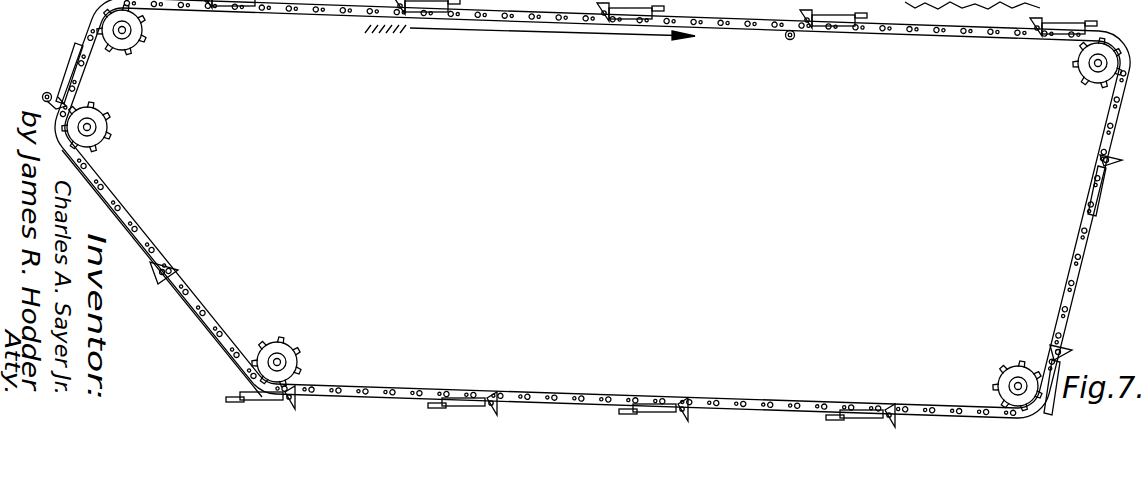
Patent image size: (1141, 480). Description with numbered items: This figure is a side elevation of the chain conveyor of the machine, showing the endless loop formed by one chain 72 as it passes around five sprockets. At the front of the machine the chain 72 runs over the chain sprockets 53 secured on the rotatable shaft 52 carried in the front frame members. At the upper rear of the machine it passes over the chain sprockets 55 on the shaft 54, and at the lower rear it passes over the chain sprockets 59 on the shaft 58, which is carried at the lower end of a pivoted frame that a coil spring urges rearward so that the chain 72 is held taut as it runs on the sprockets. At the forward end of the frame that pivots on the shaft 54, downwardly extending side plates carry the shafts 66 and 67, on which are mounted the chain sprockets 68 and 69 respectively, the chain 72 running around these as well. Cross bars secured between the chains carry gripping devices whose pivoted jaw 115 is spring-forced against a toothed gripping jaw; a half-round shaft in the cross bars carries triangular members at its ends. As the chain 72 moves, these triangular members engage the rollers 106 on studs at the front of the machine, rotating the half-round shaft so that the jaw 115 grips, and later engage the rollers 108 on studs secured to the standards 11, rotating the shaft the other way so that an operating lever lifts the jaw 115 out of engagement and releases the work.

The standards 11 is at (592, 213).
The rotatable shaft 52 is at (276, 361).
The chain sprockets 53 is at (291, 345).
The shaft 54 is at (1093, 73).
The chain sprockets 55 is at (1078, 63).
The shaft 58 is at (1017, 386).
The chain sprockets 59 is at (1005, 372).
The shaft 66 is at (120, 33).
The shaft 67 is at (90, 127).
The chain sprocket 68 is at (140, 36).
The chain sprocket 69 is at (107, 145).
The chain 72 is at (203, 309).
The rollers 106 is at (48, 92).
The rollers 108 is at (787, 40).
The jaw 115 is at (73, 44).